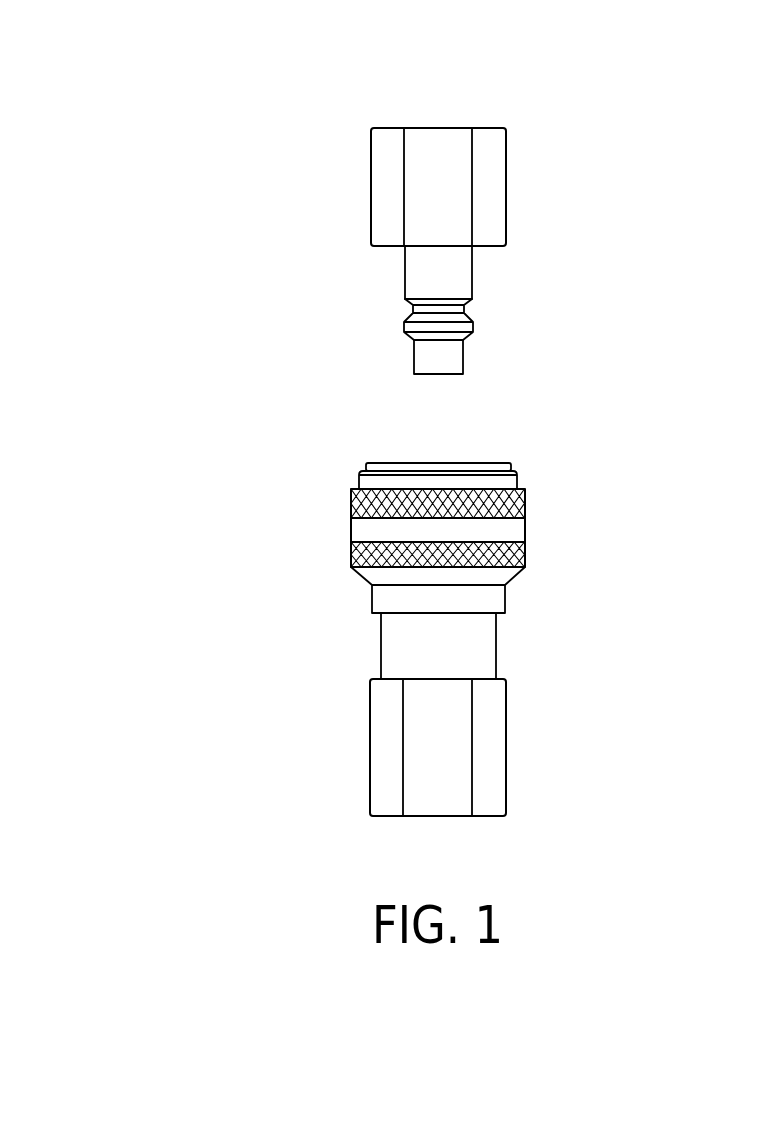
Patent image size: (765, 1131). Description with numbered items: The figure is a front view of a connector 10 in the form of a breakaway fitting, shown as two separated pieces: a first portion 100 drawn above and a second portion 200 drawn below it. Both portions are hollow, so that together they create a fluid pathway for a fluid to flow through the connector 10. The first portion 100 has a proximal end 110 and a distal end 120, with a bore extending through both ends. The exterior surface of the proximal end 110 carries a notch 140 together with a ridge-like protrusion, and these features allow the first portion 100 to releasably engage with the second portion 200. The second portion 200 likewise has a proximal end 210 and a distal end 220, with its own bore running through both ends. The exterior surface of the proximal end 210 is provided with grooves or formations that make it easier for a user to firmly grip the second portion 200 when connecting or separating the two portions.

The connector 10 is at (102, 51).
The first portion 100 is at (317, 176).
The proximal end 110 is at (508, 315).
The distal end 120 is at (563, 107).
The notch 140 is at (412, 313).
The second portion 200 is at (317, 628).
The proximal end 210 is at (578, 512).
The distal end 220 is at (540, 765).